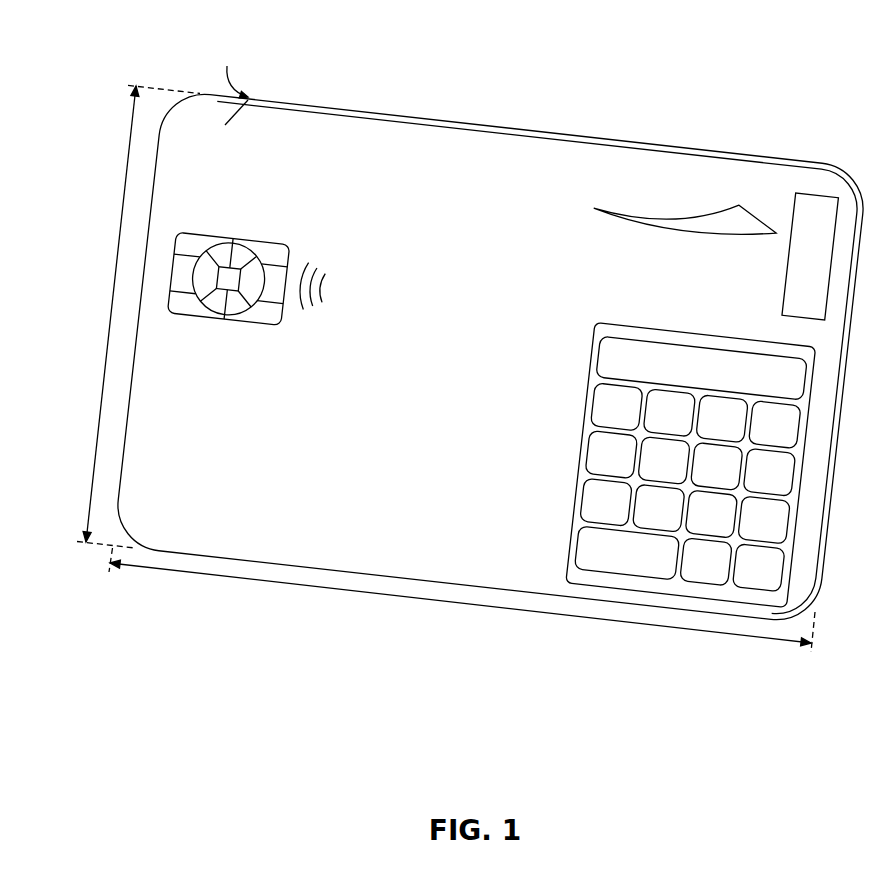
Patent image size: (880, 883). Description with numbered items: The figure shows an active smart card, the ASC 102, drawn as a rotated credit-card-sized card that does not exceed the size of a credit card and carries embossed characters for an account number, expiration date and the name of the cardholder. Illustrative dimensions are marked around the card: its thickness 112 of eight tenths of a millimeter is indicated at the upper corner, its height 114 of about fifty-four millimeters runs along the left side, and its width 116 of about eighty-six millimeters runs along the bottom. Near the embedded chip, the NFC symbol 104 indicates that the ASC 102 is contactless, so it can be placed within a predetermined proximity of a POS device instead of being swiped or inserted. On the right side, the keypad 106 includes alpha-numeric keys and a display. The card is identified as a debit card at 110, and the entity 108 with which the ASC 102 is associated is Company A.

The active smart card 102 is at (722, 155).
The NFC symbol 104 is at (333, 288).
The keypad 106 is at (670, 333).
The entity 108 is at (625, 218).
The debit card indicator 110 is at (784, 283).
The thickness 112 is at (252, 96).
The height 114 is at (102, 407).
The width 116 is at (585, 618).